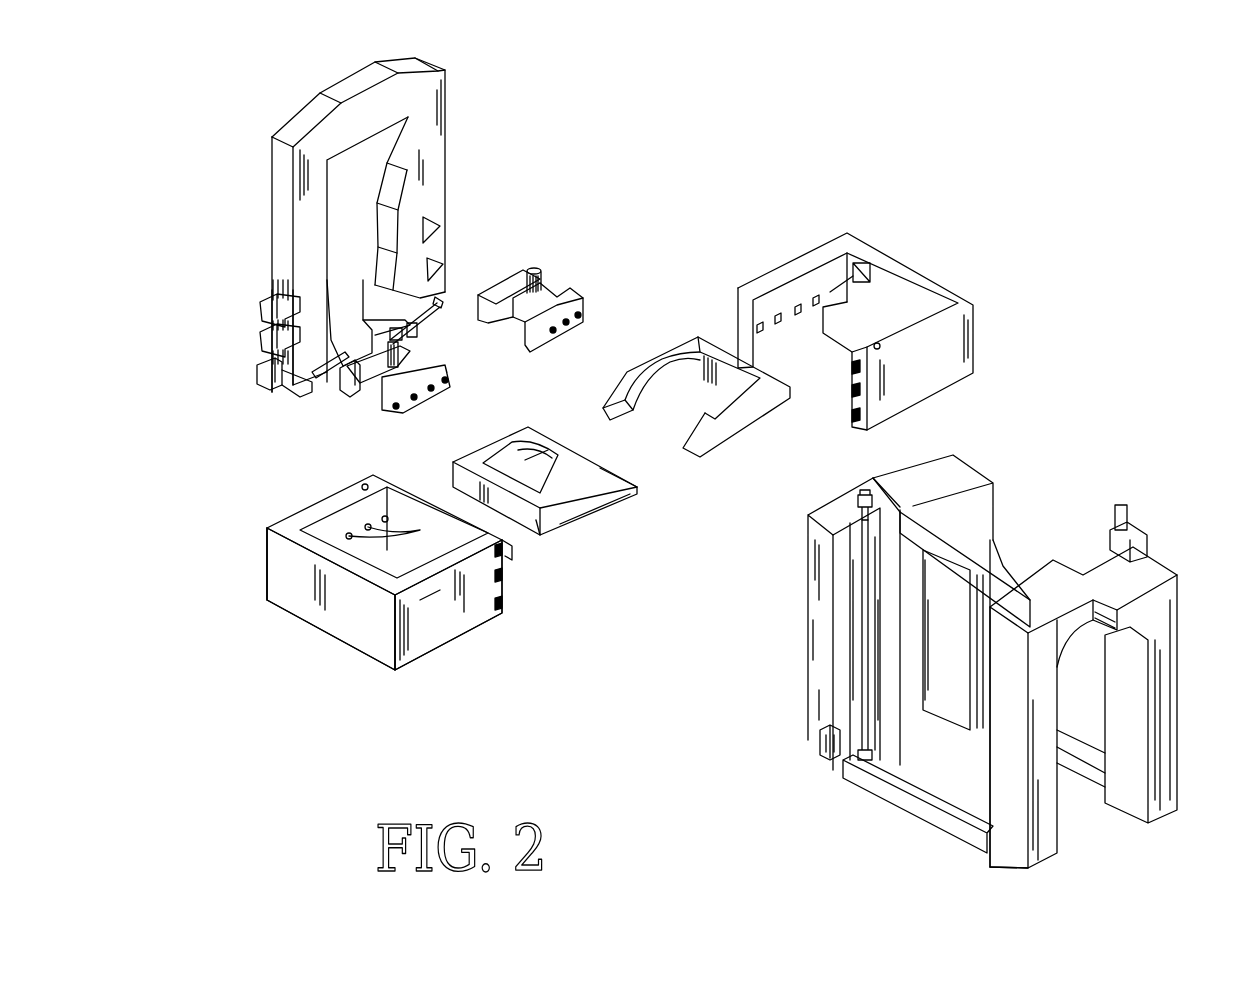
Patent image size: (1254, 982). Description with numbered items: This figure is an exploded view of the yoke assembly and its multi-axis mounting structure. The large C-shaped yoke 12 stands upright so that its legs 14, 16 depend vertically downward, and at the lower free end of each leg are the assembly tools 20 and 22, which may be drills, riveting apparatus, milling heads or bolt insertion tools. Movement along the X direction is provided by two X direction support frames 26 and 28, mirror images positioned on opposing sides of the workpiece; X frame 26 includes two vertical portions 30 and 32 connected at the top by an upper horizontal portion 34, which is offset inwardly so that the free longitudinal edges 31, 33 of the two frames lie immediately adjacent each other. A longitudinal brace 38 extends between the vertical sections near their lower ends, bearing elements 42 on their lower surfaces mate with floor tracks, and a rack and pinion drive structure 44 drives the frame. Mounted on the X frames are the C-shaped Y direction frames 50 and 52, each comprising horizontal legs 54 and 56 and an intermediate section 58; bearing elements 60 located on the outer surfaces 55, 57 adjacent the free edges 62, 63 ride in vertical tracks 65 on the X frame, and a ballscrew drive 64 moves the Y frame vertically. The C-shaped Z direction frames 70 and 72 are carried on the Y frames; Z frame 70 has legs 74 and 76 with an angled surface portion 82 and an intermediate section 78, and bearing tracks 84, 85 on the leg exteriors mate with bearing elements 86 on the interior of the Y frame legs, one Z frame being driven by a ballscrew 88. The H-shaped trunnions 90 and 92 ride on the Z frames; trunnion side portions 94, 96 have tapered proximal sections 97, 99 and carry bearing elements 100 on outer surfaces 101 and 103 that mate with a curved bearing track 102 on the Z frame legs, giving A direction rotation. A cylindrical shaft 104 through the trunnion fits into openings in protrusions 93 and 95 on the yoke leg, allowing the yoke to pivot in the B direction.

The C-shaped yoke 12 is at (460, 110).
The leg of yoke 14 is at (290, 185).
The leg of yoke 16 is at (432, 167).
The assembly tool 20 is at (300, 393).
The assembly tool 22 is at (425, 326).
The X direction support frame 26 is at (981, 673).
The X direction support frame 28 is at (1047, 493).
The vertical portion 30 is at (820, 632).
The free longitudinal edge 31 is at (868, 492).
The vertical portion 32 is at (1025, 838).
The free longitudinal edge 33 is at (1118, 612).
The upper horizontal portion 34 is at (920, 522).
The longitudinal brace 38 is at (916, 815).
The bearing elements 42 is at (1040, 872).
The rack and pinion drive structure 44 is at (815, 752).
The Y direction frame 50 is at (389, 599).
The Y direction frame 52 is at (885, 319).
The horizontal leg 54 is at (302, 498).
The outer surface 55 is at (230, 562).
The horizontal leg 56 is at (475, 622).
The outer surface 57 is at (442, 619).
The intermediate section 58 is at (298, 608).
The bearing elements 60 is at (505, 600).
The free edge 62 is at (392, 490).
The free edge 63 is at (508, 548).
The ballscrew drive 64 is at (858, 497).
The vertical tracks 65 is at (873, 545).
The Z direction frame 70 is at (568, 488).
The Z direction frame 72 is at (752, 455).
The leg of Z frame 74 is at (487, 448).
The leg of Z frame 76 is at (640, 490).
The intermediate section 78 is at (533, 524).
The angled surface portion 82 is at (622, 484).
The bearing track 84 is at (520, 438).
The bearing track 85 is at (596, 512).
The bearing elements 86 is at (420, 530).
The ballscrew 88 is at (858, 268).
The trunnion 90 is at (414, 402).
The trunnion 92 is at (596, 294).
The protrusion 93 is at (262, 293).
The side portion 94 is at (340, 378).
The protrusion 95 is at (262, 340).
The side portion 96 is at (427, 405).
The proximal section 97 is at (432, 272).
The proximal section 99 is at (425, 378).
The bearing elements 100 is at (393, 410).
The outer surface 101 is at (350, 345).
The curved bearing track 102 is at (548, 462).
The outer surface 103 is at (452, 398).
The cylindrical shaft 104 is at (401, 353).